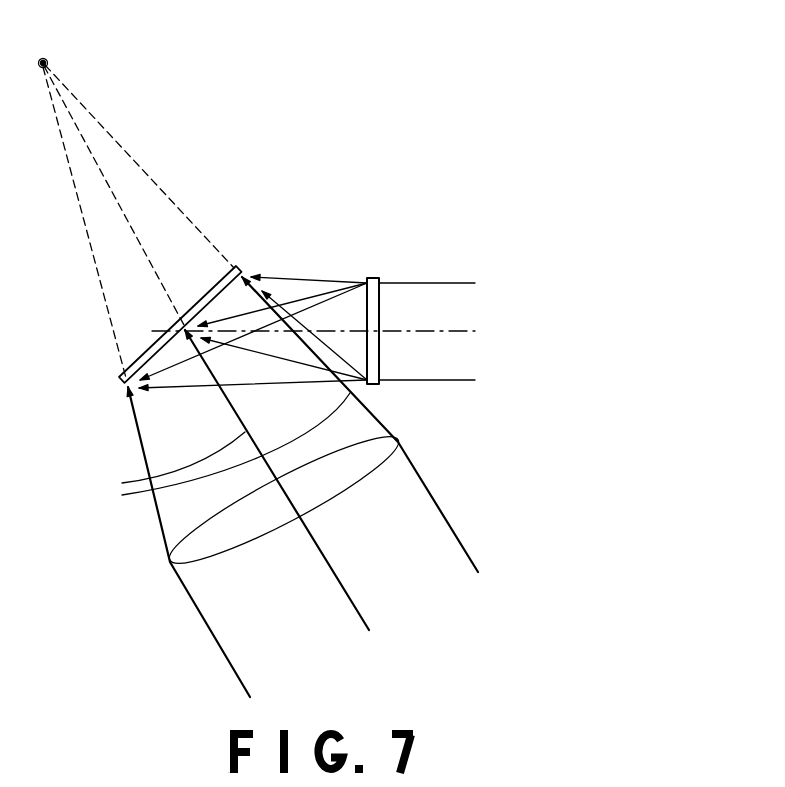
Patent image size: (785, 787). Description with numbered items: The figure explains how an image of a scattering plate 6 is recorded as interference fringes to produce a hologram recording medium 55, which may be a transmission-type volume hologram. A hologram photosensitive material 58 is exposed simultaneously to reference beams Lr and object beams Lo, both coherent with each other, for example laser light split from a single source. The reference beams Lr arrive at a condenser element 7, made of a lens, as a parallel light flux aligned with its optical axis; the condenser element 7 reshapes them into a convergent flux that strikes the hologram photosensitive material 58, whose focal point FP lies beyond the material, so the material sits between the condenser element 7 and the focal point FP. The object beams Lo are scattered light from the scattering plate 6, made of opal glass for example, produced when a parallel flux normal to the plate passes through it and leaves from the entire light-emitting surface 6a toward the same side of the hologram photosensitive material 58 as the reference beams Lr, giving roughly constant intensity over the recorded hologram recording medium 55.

The focal point FP is at (127, 199).
The hologram photosensitive material 58 is at (221, 277).
The hologram recording medium 55 is at (241, 268).
The scattering plate 6 is at (373, 278).
The light-emitting surface 6a is at (363, 310).
The condenser element 7 is at (398, 442).
The object beams Lo is at (310, 307).
The reference beams Lr is at (140, 462).